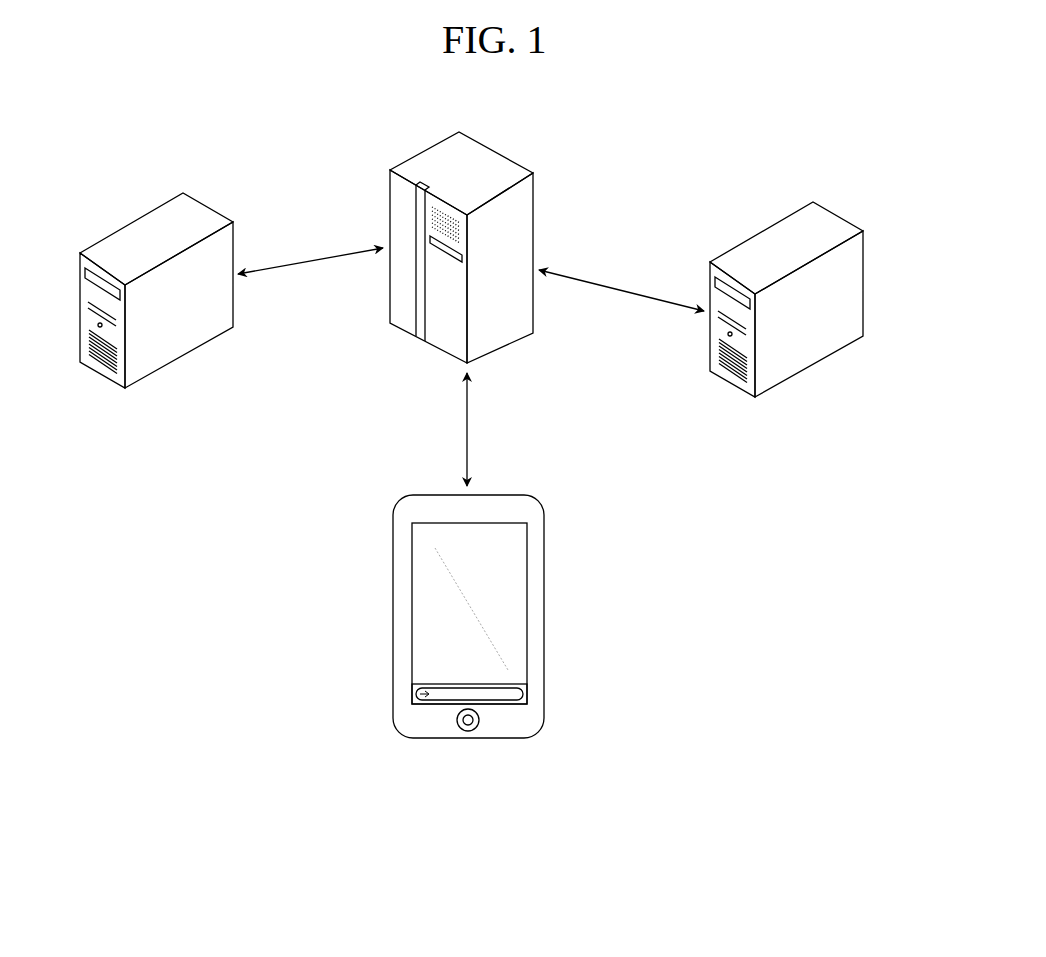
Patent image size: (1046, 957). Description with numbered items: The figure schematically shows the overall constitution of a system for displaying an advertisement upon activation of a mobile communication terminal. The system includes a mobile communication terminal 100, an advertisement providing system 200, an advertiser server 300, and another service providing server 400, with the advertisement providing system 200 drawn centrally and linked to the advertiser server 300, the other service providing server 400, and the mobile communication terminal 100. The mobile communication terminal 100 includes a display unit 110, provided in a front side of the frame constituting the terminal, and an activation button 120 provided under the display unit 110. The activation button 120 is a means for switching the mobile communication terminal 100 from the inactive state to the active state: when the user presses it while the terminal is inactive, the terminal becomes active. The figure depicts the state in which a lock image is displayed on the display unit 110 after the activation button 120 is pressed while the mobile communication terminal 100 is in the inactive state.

The mobile communication terminal 100 is at (550, 548).
The display unit 110 is at (422, 598).
The activation button 120 is at (457, 728).
The advertisement providing system 200 is at (525, 337).
The advertiser server 300 is at (170, 360).
The another service providing server 400 is at (800, 375).